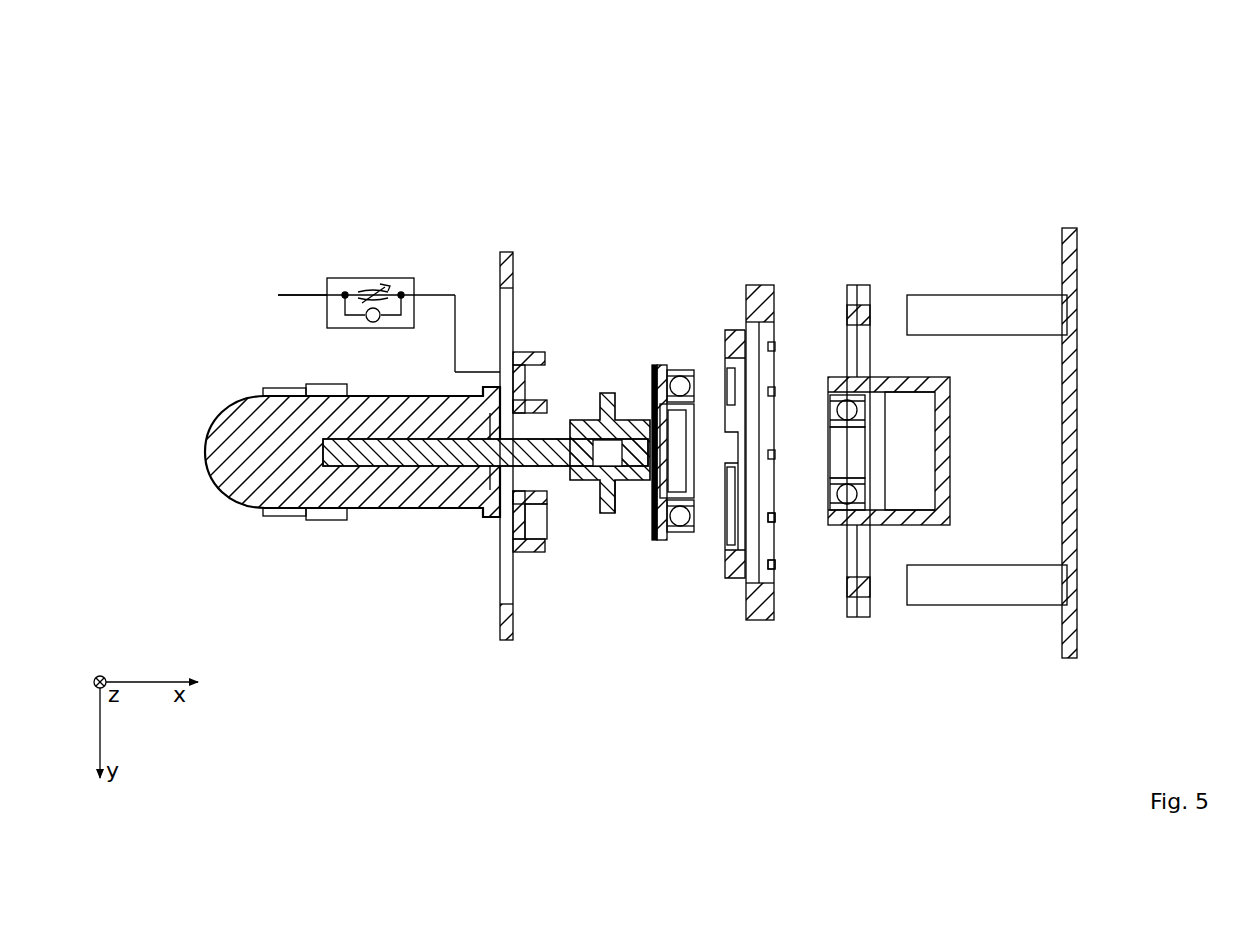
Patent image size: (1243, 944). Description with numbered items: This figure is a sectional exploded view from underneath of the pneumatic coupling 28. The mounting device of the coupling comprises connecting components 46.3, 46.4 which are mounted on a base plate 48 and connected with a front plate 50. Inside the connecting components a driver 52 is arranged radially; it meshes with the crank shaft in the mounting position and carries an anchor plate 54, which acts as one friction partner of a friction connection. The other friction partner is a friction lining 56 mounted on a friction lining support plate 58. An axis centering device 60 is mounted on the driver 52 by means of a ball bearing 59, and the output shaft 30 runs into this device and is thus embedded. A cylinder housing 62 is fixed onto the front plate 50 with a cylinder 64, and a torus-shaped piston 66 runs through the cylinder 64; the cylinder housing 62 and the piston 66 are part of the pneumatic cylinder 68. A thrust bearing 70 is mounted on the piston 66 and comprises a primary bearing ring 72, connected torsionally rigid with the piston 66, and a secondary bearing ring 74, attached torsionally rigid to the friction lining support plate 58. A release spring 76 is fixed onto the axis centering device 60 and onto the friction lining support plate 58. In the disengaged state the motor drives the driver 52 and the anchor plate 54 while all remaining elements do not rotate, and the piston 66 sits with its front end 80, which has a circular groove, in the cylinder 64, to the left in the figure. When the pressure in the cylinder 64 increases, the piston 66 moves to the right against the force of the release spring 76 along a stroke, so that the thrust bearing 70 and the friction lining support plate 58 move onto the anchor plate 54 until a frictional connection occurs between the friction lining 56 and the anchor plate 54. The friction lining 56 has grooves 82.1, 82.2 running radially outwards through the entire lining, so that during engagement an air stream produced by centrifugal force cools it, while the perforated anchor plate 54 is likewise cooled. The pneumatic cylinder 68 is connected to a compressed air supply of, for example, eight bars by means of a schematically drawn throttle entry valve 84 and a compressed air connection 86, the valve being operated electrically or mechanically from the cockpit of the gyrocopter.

The pneumatic coupling 28 is at (1150, 160).
The output shaft 30 is at (553, 432).
The connecting component 46.3 is at (946, 604).
The connecting component 46.4 is at (935, 300).
The base plate 48 is at (1078, 265).
The front plate 50 is at (508, 252).
The driver 52 is at (948, 388).
The anchor plate 54 is at (852, 322).
The friction lining 56 is at (770, 285).
The friction lining support plate 58 is at (743, 290).
The ball bearing 59 is at (822, 405).
The axis centering device 60 is at (623, 488).
The cylinder housing 62 is at (520, 352).
The cylinder 64 is at (536, 537).
The piston 66 is at (659, 358).
The pneumatic cylinder 68 is at (618, 226).
The thrust bearing 70 is at (682, 358).
The primary bearing ring 72 is at (695, 505).
The secondary bearing ring 74 is at (684, 540).
The release spring 76 is at (603, 522).
The front end 80 is at (650, 390).
The groove 82.1 is at (777, 570).
The groove 82.2 is at (780, 522).
The throttle entry valve 84 is at (367, 275).
The compressed air connection 86 is at (297, 292).